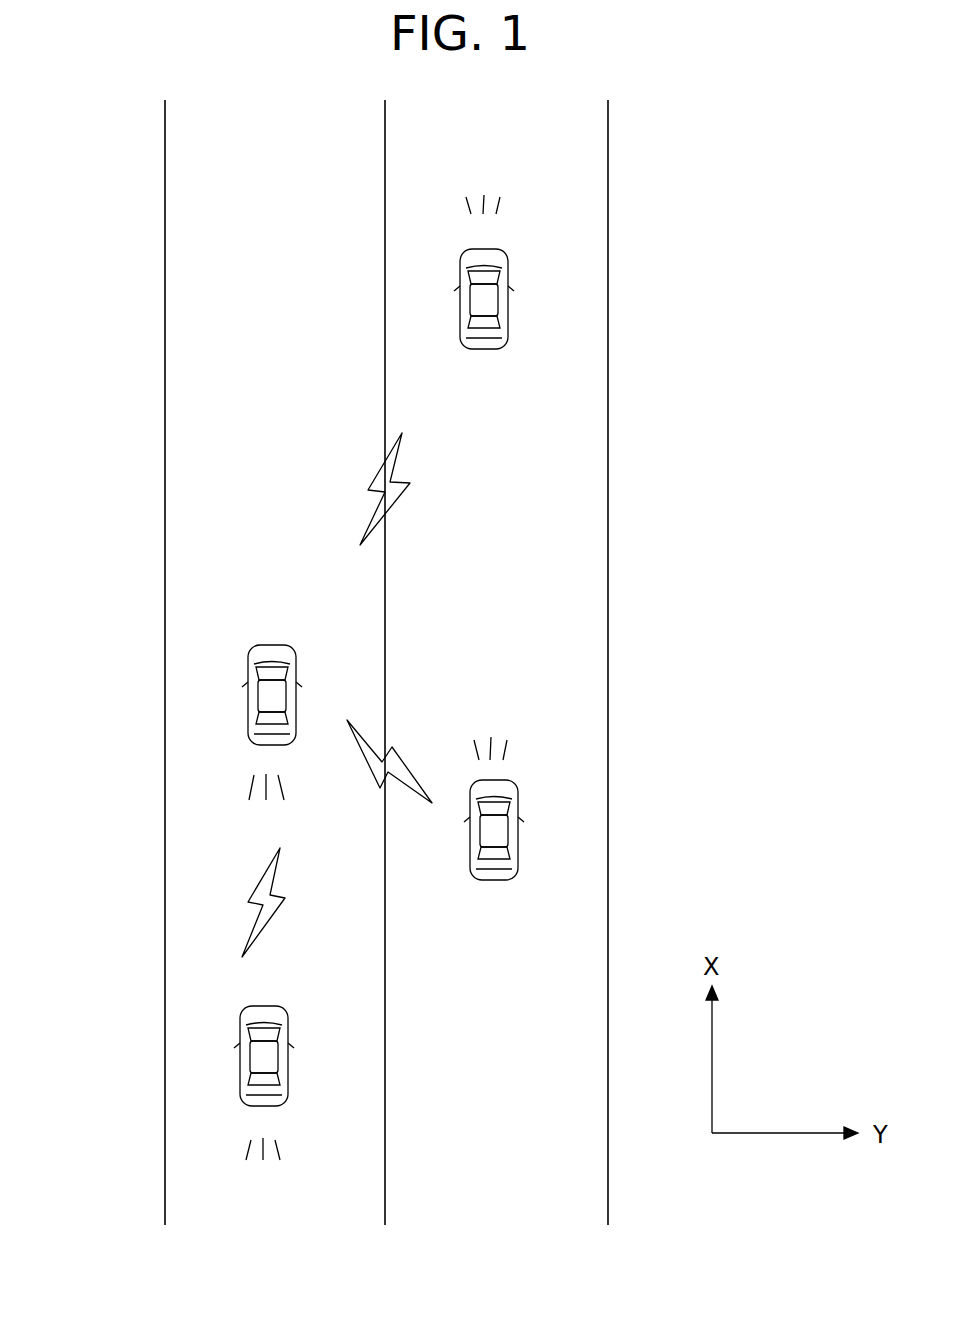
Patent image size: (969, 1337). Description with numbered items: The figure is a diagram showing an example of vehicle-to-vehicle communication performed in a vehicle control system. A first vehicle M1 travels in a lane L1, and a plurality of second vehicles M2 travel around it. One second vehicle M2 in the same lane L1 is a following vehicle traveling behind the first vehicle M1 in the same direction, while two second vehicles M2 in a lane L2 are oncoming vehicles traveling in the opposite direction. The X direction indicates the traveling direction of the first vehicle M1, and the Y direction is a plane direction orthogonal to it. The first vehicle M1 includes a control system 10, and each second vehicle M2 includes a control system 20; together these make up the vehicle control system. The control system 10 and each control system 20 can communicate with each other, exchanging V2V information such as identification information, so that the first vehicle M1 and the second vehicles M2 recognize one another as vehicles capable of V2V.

The control system 10 is at (220, 727).
The control system 20 is at (523, 297).
The first vehicle M1 is at (248, 660).
The second vehicle M2 is at (510, 270).
The lane L1 is at (192, 543).
The lane L2 is at (577, 548).